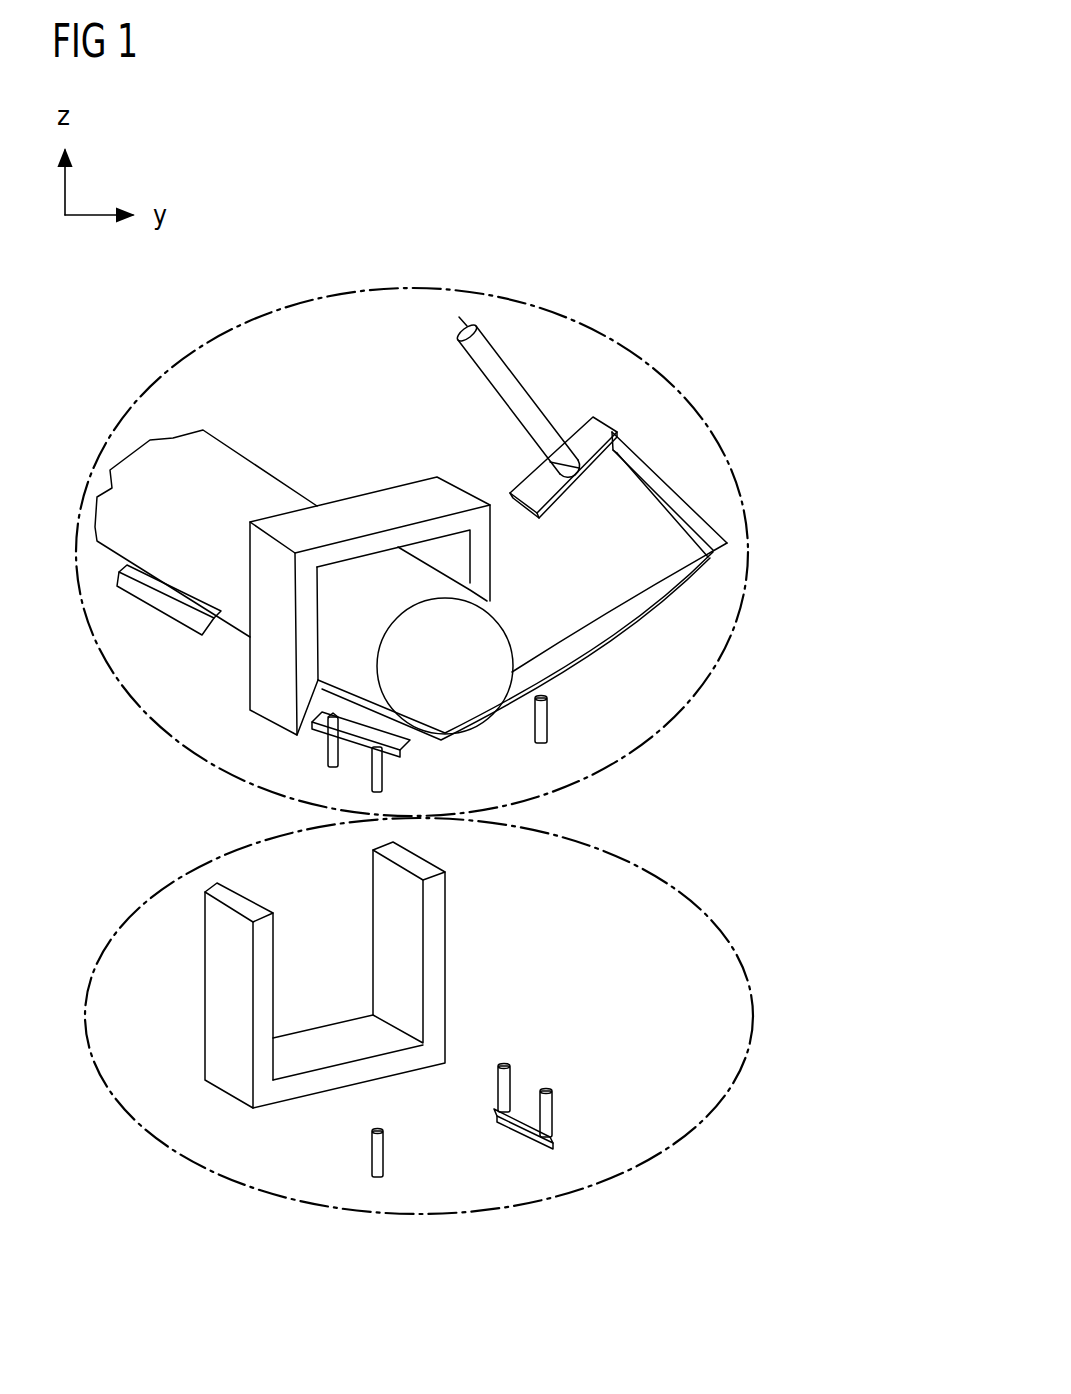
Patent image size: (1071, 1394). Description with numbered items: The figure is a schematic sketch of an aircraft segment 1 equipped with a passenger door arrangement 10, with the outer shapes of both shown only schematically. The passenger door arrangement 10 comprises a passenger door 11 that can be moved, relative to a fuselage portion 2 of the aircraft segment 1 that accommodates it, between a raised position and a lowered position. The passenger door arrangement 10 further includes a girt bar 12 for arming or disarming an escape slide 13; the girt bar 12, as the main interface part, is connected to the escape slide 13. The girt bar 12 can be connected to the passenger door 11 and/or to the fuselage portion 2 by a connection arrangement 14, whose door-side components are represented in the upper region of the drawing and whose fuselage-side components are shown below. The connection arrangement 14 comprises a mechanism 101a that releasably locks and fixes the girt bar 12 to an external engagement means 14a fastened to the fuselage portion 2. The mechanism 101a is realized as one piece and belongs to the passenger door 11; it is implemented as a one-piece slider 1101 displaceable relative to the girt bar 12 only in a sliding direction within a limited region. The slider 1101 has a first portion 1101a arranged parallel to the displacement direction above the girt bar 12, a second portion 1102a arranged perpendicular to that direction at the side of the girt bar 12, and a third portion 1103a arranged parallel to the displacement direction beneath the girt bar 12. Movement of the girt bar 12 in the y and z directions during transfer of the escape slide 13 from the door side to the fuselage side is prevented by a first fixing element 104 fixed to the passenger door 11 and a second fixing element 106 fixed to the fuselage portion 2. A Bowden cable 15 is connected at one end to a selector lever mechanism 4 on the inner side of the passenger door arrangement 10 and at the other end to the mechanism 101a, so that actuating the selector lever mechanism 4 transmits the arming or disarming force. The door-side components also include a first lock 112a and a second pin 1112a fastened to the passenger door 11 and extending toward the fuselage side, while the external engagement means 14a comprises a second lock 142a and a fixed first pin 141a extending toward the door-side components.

The aircraft segment 1 is at (600, 173).
The fuselage portion 2 is at (784, 1109).
The selector lever mechanism 4 is at (459, 317).
The passenger door arrangement 10 is at (329, 259).
The passenger door 11 is at (807, 320).
The girt bar 12 is at (243, 473).
The escape slide 13 is at (190, 618).
The connection arrangement 14 is at (140, 818).
The external engagement means 14a is at (696, 933).
The Bowden cable 15 is at (503, 378).
The mechanism 101a is at (662, 621).
The first fixing element 104 is at (430, 505).
The second fixing element 106 is at (447, 958).
The first lock 112a is at (365, 762).
The first pin 141a is at (370, 1160).
The second lock 142a is at (559, 1115).
The one-piece slider 1101 is at (619, 529).
The first portion 1101a is at (597, 417).
The second portion 1102a is at (681, 493).
The third portion 1103a is at (677, 569).
The second pin 1112a is at (553, 722).